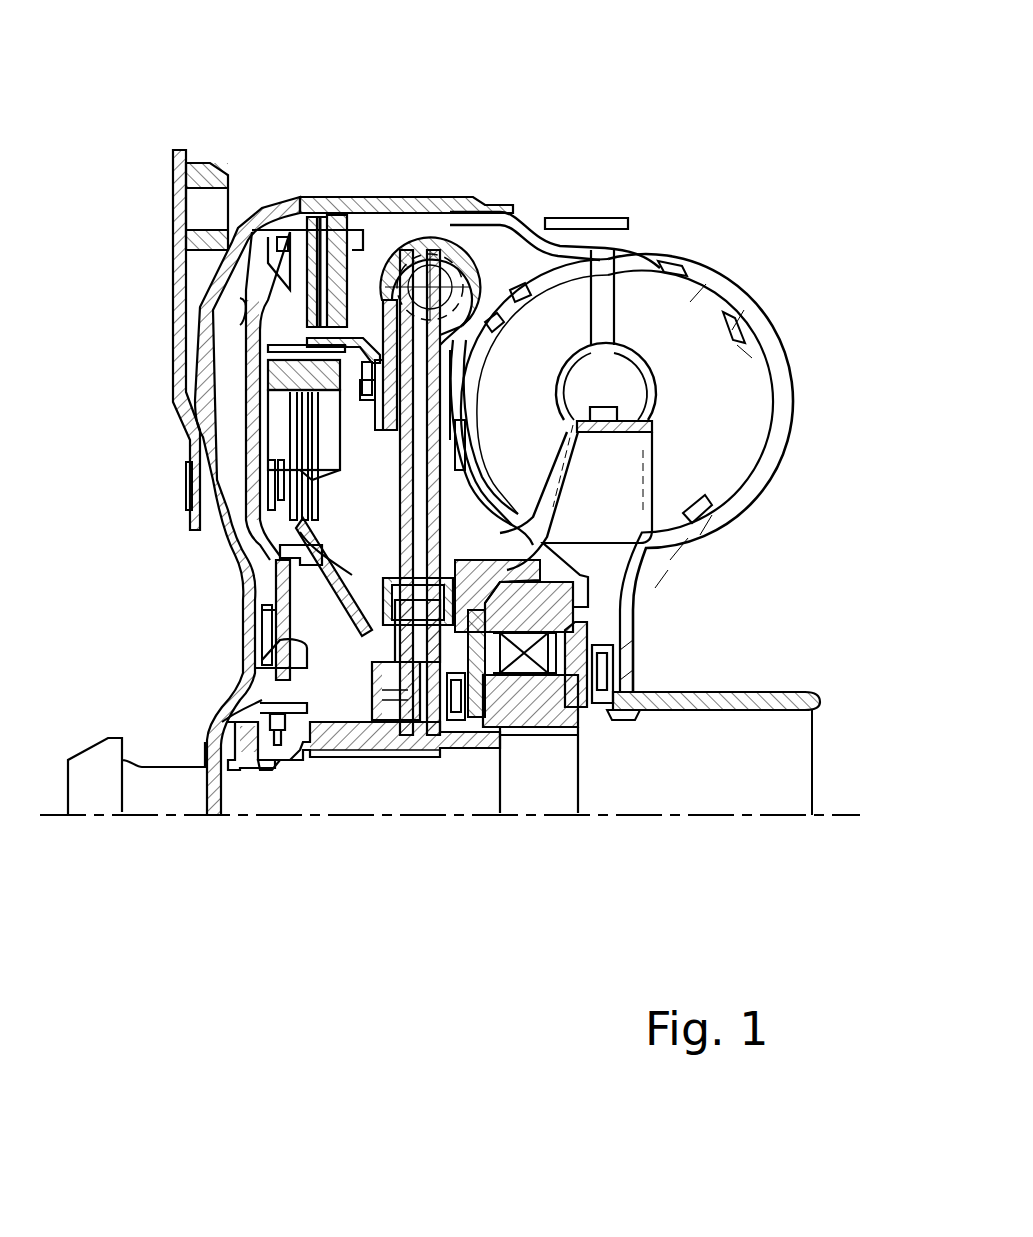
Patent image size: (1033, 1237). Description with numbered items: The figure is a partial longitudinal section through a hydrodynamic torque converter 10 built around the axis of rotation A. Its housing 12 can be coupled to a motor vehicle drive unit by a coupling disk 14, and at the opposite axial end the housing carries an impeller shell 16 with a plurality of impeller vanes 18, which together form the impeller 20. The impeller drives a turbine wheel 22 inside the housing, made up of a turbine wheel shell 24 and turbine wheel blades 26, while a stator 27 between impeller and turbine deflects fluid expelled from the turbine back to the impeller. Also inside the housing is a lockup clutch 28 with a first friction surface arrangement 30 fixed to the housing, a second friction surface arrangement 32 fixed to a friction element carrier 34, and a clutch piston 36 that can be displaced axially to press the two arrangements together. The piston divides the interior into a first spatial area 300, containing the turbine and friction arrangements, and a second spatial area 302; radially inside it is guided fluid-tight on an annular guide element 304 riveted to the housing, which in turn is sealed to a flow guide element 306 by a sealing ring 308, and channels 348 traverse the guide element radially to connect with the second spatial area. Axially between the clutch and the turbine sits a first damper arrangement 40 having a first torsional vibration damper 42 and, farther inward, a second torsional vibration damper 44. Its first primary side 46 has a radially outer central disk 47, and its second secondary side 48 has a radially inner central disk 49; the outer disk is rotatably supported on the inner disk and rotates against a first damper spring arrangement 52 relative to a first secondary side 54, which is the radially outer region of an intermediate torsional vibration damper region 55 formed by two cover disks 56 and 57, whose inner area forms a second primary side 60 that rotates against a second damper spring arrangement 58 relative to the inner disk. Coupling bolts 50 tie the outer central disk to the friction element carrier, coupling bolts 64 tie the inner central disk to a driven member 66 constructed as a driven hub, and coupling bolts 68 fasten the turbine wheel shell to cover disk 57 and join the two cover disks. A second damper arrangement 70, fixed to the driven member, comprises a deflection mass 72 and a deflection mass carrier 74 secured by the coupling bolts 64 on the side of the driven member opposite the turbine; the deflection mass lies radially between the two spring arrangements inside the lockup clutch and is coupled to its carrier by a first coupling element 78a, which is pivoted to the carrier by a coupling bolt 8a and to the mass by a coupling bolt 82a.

The hydrodynamic torque converter 10 is at (170, 128).
The housing 12 is at (193, 293).
The coupling disk 14 is at (185, 248).
The impeller shell 16 is at (722, 336).
The impeller vanes 18 is at (704, 376).
The impeller 20 is at (738, 510).
The turbine wheel 22 is at (604, 165).
The turbine wheel shell 24 is at (596, 265).
The turbine wheel blades 26 is at (556, 347).
The stator 27 is at (625, 505).
The lockup clutch 28 is at (300, 175).
The first friction surface arrangement 30 is at (330, 212).
The second friction surface arrangement 32 is at (338, 295).
The friction element carrier 34 is at (282, 354).
The clutch piston 36 is at (235, 335).
The first damper arrangement 40 is at (420, 183).
The first torsional vibration damper 42 is at (486, 255).
The second torsional vibration damper 44 is at (335, 552).
The first primary side 46 is at (437, 240).
The radially outer central disk 47 is at (433, 268).
The second secondary side 48 is at (560, 656).
The radially inner central disk 49 is at (415, 648).
The coupling bolts 50 is at (455, 390).
The first damper spring arrangement 52 is at (487, 285).
The first secondary side 54 is at (378, 268).
The intermediate torsional vibration damper region 55 is at (450, 436).
The cover disk 56 is at (347, 600).
The cover disk 57 is at (290, 640).
The second damper spring arrangement 58 is at (353, 532).
The second primary side 60 is at (362, 466).
The coupling bolts 64 is at (400, 690).
The driven member 66 is at (330, 770).
The coupling bolts 68 is at (412, 652).
The second damper arrangement 70 is at (340, 658).
The deflection mass 72 is at (300, 386).
The deflection mass carrier 74 is at (267, 680).
The first coupling element 78a is at (283, 481).
The coupling bolt 8a is at (315, 496).
The coupling bolt 82a is at (285, 410).
The first spatial area 300 is at (540, 262).
The second spatial area 302 is at (240, 313).
The guide element 304 is at (245, 715).
The flow guide element 306 is at (265, 770).
The sealing ring 308 is at (275, 748).
The channels 348 is at (385, 578).
The axis of rotation A is at (60, 815).